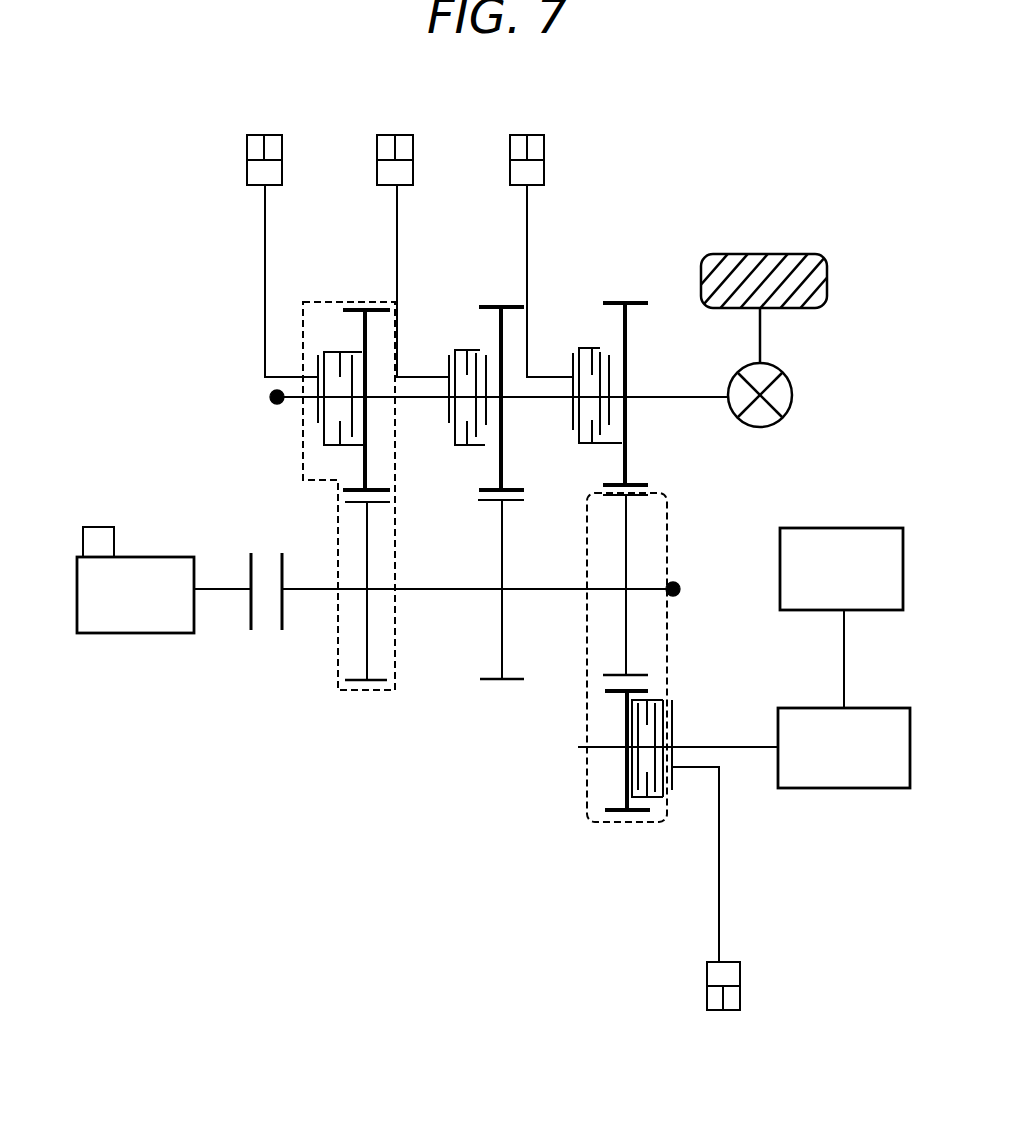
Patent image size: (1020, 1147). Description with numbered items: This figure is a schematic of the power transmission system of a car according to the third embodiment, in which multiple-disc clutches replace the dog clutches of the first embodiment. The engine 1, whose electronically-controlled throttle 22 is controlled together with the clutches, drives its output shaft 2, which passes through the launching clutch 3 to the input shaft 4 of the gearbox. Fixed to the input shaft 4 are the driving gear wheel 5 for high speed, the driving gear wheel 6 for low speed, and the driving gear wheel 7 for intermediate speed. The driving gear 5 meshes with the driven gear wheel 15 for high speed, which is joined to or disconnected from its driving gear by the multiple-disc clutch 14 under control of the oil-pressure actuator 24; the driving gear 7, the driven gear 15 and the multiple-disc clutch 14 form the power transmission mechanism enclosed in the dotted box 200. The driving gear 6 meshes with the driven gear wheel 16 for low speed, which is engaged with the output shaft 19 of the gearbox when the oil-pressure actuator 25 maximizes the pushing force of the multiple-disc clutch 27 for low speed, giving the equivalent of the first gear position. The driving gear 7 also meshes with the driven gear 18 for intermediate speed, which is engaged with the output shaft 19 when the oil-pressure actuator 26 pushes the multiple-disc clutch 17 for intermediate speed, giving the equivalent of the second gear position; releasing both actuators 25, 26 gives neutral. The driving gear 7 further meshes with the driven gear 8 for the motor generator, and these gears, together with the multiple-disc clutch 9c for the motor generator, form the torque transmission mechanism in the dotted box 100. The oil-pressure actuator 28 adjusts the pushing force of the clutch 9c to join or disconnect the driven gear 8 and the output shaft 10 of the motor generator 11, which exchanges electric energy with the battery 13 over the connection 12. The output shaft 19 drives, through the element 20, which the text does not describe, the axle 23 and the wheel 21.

The engine 1 is at (90, 630).
The output shaft of the engine 2 is at (233, 592).
The launching clutch 3 is at (275, 560).
The input shaft of the gearbox 4 is at (310, 592).
The driving gear wheel for high speed 5 is at (368, 670).
The driving gear wheel for low speed 6 is at (503, 668).
The driving gear wheel for intermediate speed 7 is at (628, 612).
The driven gear for the motor generator 8 is at (625, 790).
The multiple-disc clutch for the motor generator 9c is at (655, 720).
The output shaft of the motor generator 10 is at (762, 750).
The motor generator 11 is at (840, 788).
The power line 12 is at (846, 660).
The battery 13 is at (831, 528).
The multiple-disc clutch 14 is at (326, 352).
The driven gear wheel for high speed 15 is at (367, 310).
The driven gear wheel for low speed 16 is at (501, 307).
The multiple-disc clutch for intermediate speed 17 is at (597, 348).
The driven gear for intermediate speed 18 is at (627, 303).
The output shaft of the gearbox 19 is at (685, 396).
The differential gear 20 is at (792, 395).
The wheel 21 is at (772, 258).
The electronically-controlled throttle 22 is at (102, 538).
The axle 23 is at (762, 336).
The oil-pressure actuator 24 is at (257, 135).
The oil-pressure actuator for low speed 25 is at (383, 135).
The oil-pressure actuator for intermediate speed 26 is at (522, 135).
The multiple-disc clutch for low speed 27 is at (468, 422).
The oil-pressure actuator for motor generator 28 is at (713, 1010).
The dotted box 100 is at (655, 546).
The dotted box 200 is at (302, 463).